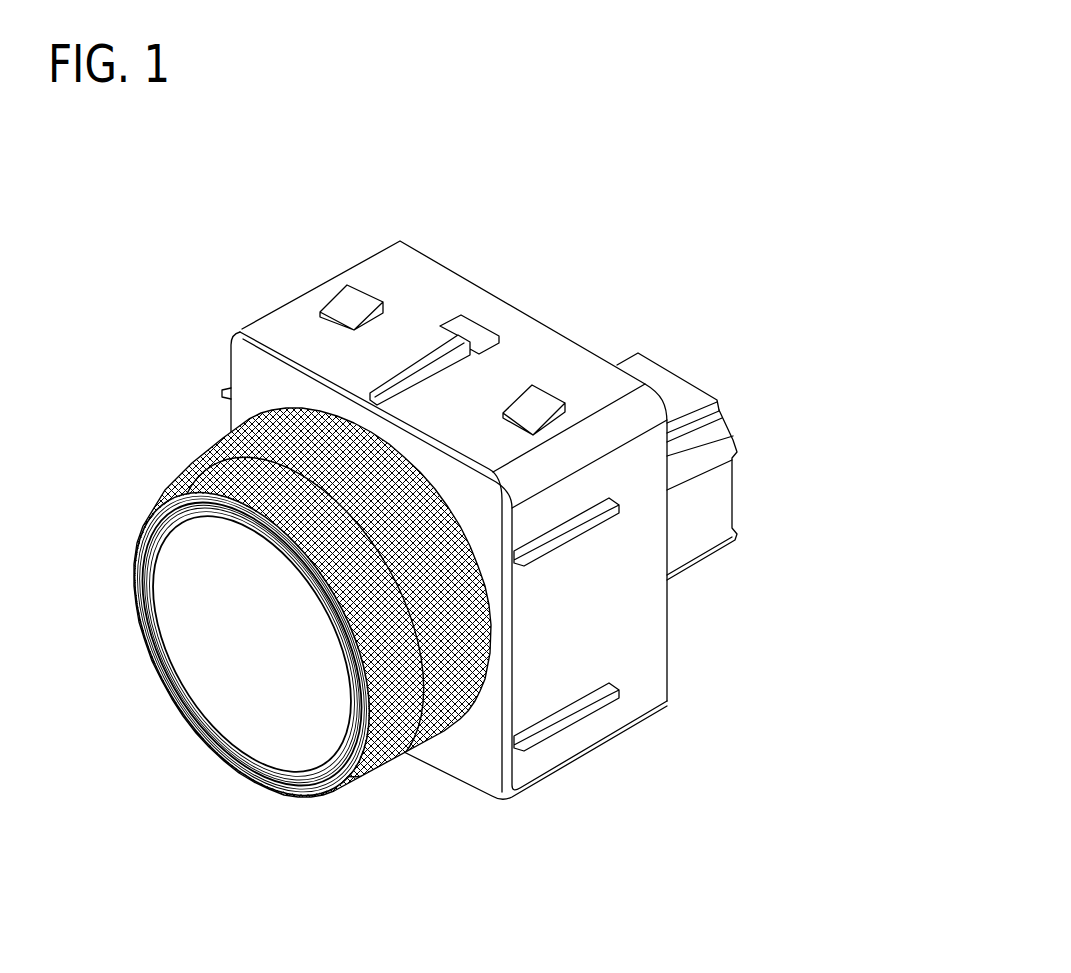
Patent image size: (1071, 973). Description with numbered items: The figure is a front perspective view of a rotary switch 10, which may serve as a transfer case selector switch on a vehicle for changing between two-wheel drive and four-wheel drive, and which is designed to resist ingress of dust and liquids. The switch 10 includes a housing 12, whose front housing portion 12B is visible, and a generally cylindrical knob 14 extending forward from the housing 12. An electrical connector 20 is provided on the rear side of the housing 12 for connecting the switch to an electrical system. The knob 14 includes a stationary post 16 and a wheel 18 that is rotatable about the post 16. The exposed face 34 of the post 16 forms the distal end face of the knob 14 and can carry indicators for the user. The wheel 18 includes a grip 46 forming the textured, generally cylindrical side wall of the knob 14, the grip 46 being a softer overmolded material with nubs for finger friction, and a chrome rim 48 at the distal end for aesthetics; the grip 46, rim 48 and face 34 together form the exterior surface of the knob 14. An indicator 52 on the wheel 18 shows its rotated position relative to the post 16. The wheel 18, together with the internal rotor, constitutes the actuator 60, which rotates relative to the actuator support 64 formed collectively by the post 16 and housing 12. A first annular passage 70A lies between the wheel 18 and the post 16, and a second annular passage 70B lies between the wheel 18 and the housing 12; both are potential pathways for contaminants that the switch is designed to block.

The rotary switch 10 is at (517, 523).
The housing 12 is at (318, 273).
The front housing portion 12B is at (427, 290).
The knob 14 is at (517, 619).
The post 16 is at (283, 752).
The wheel 18 is at (313, 788).
The electrical connector 20 is at (710, 504).
The face 34 is at (235, 655).
The grip 46 is at (430, 690).
The rim 48 is at (167, 670).
The indicator 52 is at (140, 580).
The actuator 60 is at (160, 415).
The actuator support 64 is at (557, 833).
The first annular passage 70A is at (192, 511).
The second annular passage 70B is at (283, 412).